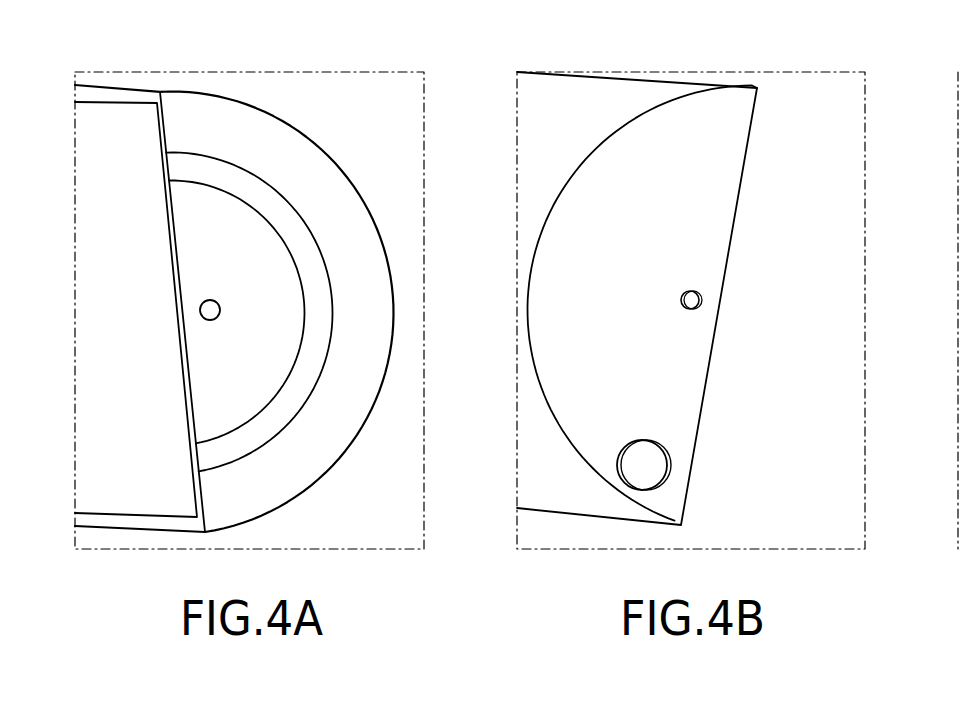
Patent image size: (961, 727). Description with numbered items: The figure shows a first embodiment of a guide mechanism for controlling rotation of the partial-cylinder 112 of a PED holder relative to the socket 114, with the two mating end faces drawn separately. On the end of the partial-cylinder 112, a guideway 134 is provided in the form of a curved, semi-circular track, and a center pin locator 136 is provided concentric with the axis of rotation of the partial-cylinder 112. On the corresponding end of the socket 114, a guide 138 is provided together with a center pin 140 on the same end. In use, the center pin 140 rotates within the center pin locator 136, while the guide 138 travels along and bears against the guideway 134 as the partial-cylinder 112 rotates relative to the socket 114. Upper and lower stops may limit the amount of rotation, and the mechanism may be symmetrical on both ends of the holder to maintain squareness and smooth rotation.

In FIG. 4A, the partial-cylinder 112 is at (200, 103).
In FIG. 4B, the socket 114 is at (715, 100).
In FIG. 4A, the guideway 134 is at (290, 195).
In FIG. 4A, the center pin locator 136 is at (220, 306).
In FIG. 4B, the guide 138 is at (650, 465).
In FIG. 4B, the center pin 140 is at (697, 297).